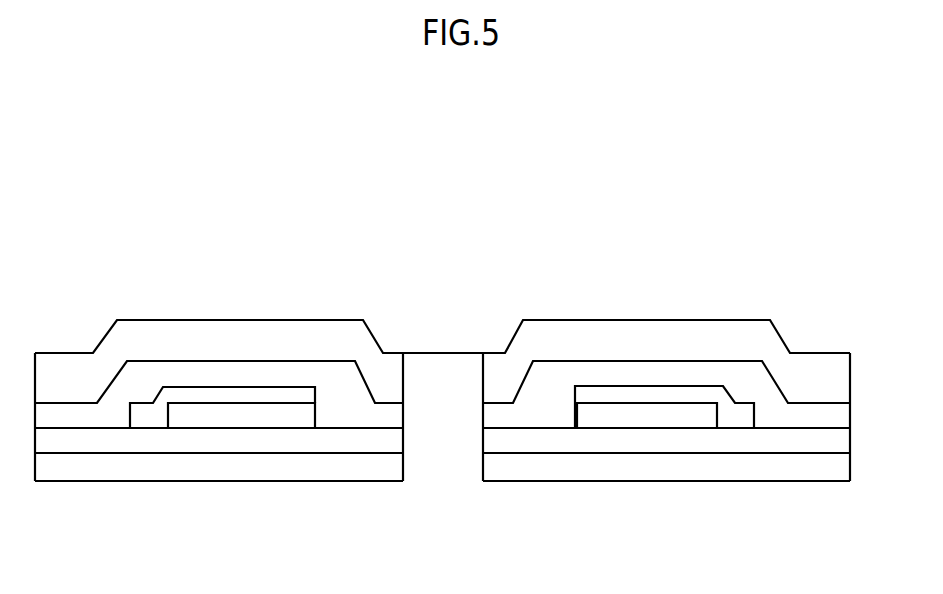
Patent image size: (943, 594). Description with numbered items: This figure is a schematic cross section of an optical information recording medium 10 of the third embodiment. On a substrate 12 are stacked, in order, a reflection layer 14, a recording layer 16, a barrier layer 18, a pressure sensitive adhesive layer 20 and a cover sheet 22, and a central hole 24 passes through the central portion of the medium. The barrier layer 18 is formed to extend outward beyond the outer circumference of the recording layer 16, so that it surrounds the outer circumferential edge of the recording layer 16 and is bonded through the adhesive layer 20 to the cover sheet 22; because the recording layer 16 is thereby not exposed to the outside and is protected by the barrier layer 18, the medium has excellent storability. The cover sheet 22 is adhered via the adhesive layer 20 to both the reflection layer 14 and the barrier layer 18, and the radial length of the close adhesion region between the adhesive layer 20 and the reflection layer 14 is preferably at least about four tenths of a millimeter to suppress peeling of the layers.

The optical information recording medium 10 is at (661, 186).
The substrate 12 is at (67, 470).
The reflection layer 14 is at (143, 445).
The recording layer 16 is at (198, 418).
The barrier layer 18 is at (277, 398).
The pressure sensitive adhesive layer 20 is at (136, 382).
The cover sheet 22 is at (227, 342).
The central hole 24 is at (405, 377).